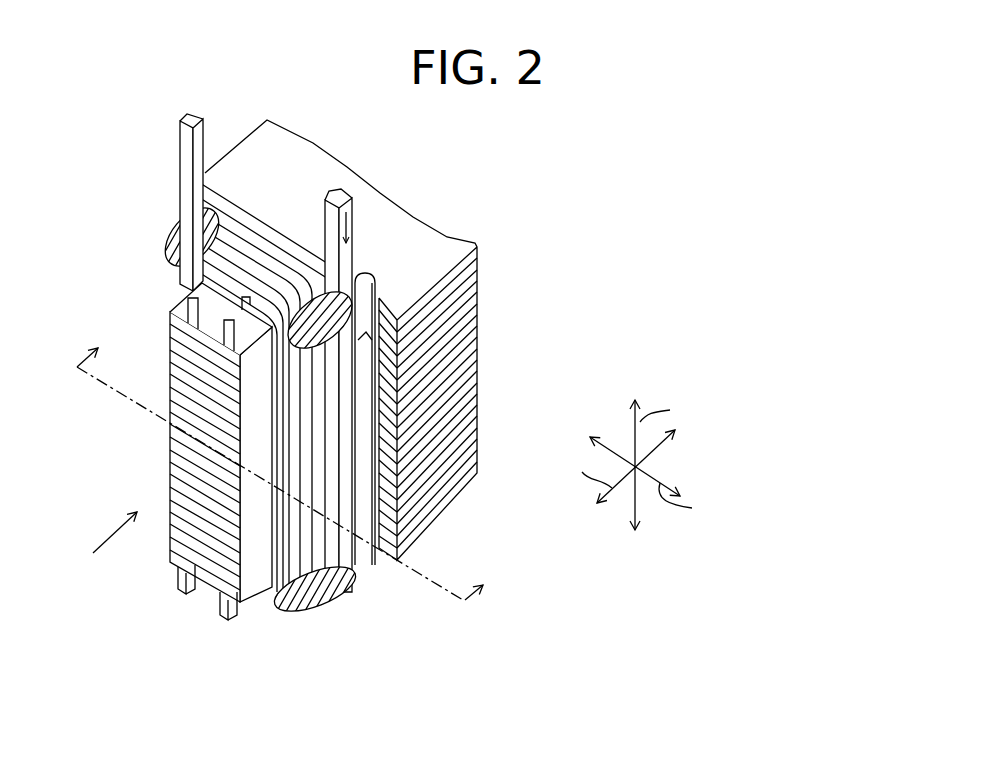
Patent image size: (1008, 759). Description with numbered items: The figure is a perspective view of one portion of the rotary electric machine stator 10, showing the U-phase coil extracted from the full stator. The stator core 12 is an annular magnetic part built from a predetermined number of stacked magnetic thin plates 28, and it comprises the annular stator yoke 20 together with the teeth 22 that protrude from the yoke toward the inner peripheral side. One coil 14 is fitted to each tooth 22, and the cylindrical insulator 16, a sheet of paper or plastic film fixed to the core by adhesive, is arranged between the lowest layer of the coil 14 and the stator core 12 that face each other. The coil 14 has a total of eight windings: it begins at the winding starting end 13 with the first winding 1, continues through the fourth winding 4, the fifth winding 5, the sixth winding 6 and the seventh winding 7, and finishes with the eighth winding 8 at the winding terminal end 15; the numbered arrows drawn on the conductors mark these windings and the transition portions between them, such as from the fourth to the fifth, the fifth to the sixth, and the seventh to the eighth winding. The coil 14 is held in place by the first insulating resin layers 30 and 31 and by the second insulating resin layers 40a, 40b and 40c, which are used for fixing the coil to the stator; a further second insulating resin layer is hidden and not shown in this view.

The rotary electric machine stator 10 is at (303, 98).
The stator core 12 is at (397, 340).
The winding starting end 13 is at (326, 212).
The coil 14 is at (318, 476).
The winding terminal end 15 is at (161, 202).
The insulator 16 is at (368, 565).
The stator yoke 20 is at (478, 248).
The tooth 22 is at (192, 533).
The magnetic thin plate 28 is at (480, 333).
The first insulating resin layer 30 is at (275, 553).
The first insulating resin layer 31 is at (222, 292).
The second insulating resin layer 40a is at (163, 240).
The second insulating resin layer 40b is at (353, 273).
The second insulating resin layer 40c is at (323, 608).
The first winding 1 is at (278, 232).
The fourth winding 4 is at (267, 248).
The fifth winding 5 is at (321, 440).
The sixth winding 6 is at (271, 265).
The seventh winding 7 is at (254, 283).
The eighth winding 8 is at (198, 160).